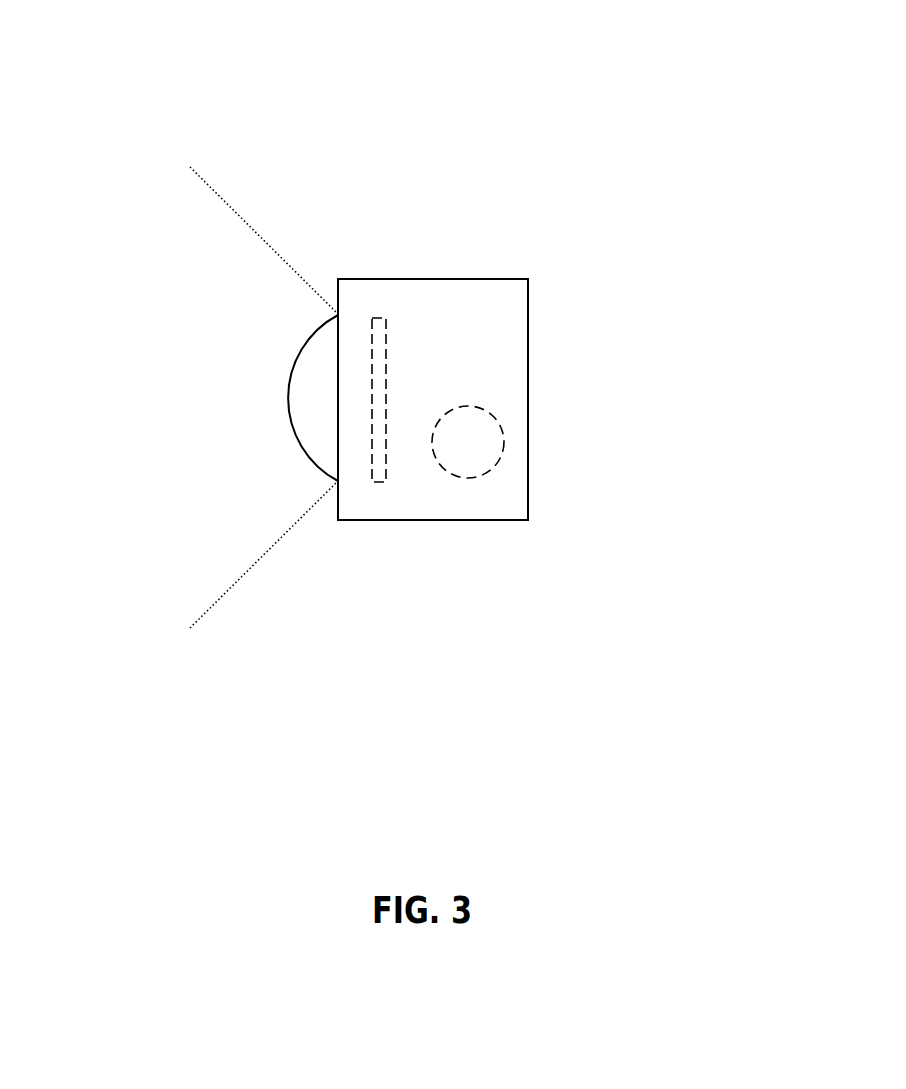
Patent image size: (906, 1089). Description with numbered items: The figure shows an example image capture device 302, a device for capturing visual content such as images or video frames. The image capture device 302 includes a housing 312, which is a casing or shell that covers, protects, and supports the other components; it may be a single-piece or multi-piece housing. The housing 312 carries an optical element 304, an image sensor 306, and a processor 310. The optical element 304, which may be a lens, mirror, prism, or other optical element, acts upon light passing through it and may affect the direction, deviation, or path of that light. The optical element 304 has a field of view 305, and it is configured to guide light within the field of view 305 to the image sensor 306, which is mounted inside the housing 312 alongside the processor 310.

The image capture device 302 is at (492, 147).
The optical element 304 is at (312, 470).
The field of view 305 is at (260, 547).
The image sensor 306 is at (385, 317).
The processor 310 is at (505, 448).
The housing 312 is at (445, 522).